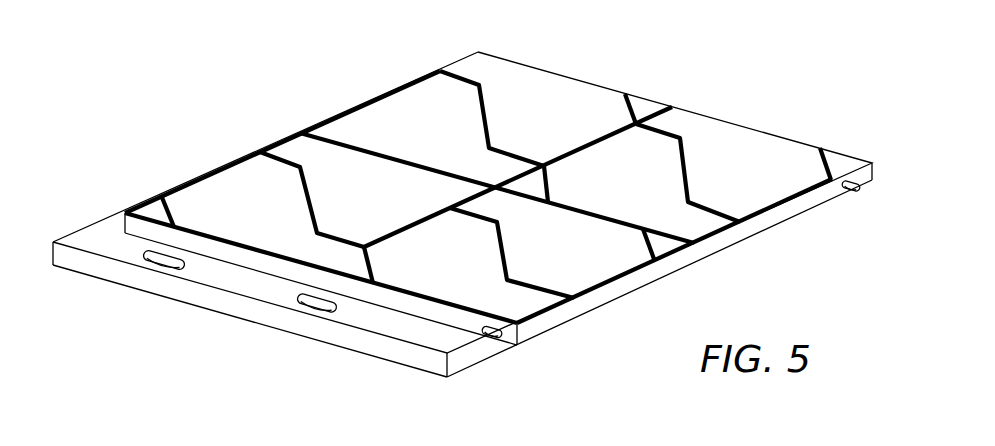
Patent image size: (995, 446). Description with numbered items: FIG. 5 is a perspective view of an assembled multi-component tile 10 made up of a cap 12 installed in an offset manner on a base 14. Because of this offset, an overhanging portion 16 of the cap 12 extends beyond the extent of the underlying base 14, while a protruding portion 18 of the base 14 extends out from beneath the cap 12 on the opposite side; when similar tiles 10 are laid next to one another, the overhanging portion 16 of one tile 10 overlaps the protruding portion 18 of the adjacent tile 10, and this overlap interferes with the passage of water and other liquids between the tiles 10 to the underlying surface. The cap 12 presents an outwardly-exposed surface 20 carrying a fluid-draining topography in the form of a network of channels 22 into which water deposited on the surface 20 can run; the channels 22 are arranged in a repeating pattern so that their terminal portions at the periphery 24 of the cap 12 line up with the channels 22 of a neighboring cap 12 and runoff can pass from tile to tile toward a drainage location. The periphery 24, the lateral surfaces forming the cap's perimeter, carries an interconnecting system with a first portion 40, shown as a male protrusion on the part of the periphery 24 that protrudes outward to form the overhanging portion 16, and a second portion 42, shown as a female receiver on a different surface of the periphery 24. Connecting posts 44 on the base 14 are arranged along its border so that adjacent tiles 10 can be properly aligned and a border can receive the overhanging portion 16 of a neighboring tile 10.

The multi-component tile 10 is at (148, 115).
The cap 12 is at (786, 129).
The base 14 is at (98, 210).
The overhanging portion 16 is at (507, 344).
The protruding portion 18 is at (252, 279).
The outwardly-exposed surface 20 is at (556, 115).
The channels 22 is at (483, 190).
The periphery 24 is at (609, 294).
The first portion 40 is at (851, 192).
The second portion 42 is at (487, 336).
The connecting posts 44 is at (320, 308).